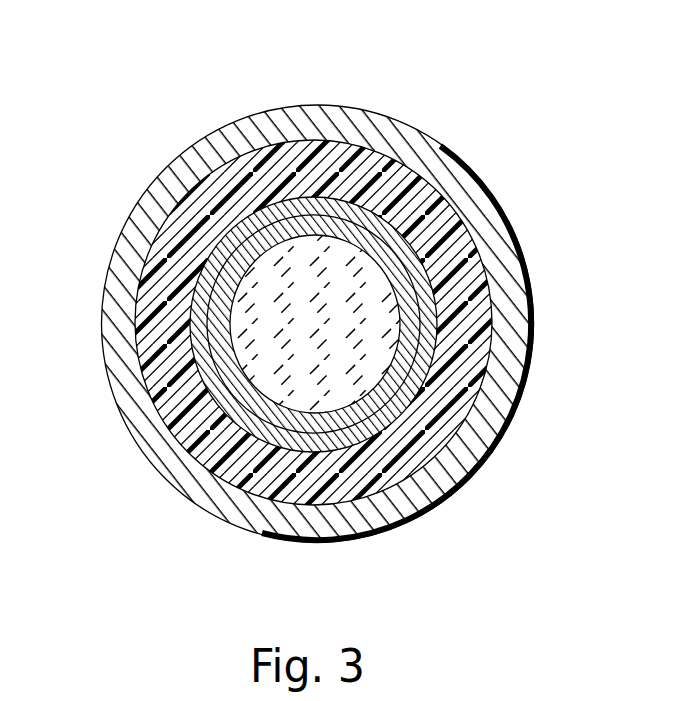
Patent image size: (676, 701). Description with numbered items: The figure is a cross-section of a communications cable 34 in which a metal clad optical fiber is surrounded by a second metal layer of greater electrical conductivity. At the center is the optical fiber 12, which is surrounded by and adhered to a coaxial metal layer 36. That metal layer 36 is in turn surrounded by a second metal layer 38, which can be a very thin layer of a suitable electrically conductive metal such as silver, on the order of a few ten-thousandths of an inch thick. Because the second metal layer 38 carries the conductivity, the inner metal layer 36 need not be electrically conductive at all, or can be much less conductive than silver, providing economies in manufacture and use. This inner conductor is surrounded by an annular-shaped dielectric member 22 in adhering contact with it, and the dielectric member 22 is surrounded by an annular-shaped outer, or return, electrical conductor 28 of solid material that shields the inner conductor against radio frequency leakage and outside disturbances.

The optical fiber 12 is at (300, 331).
The dielectric member 22 is at (252, 168).
The outer electrical conductor 28 is at (158, 175).
The communications cable 34 is at (302, 85).
The coaxial metal layer 36 is at (345, 428).
The second metal layer 38 is at (418, 387).